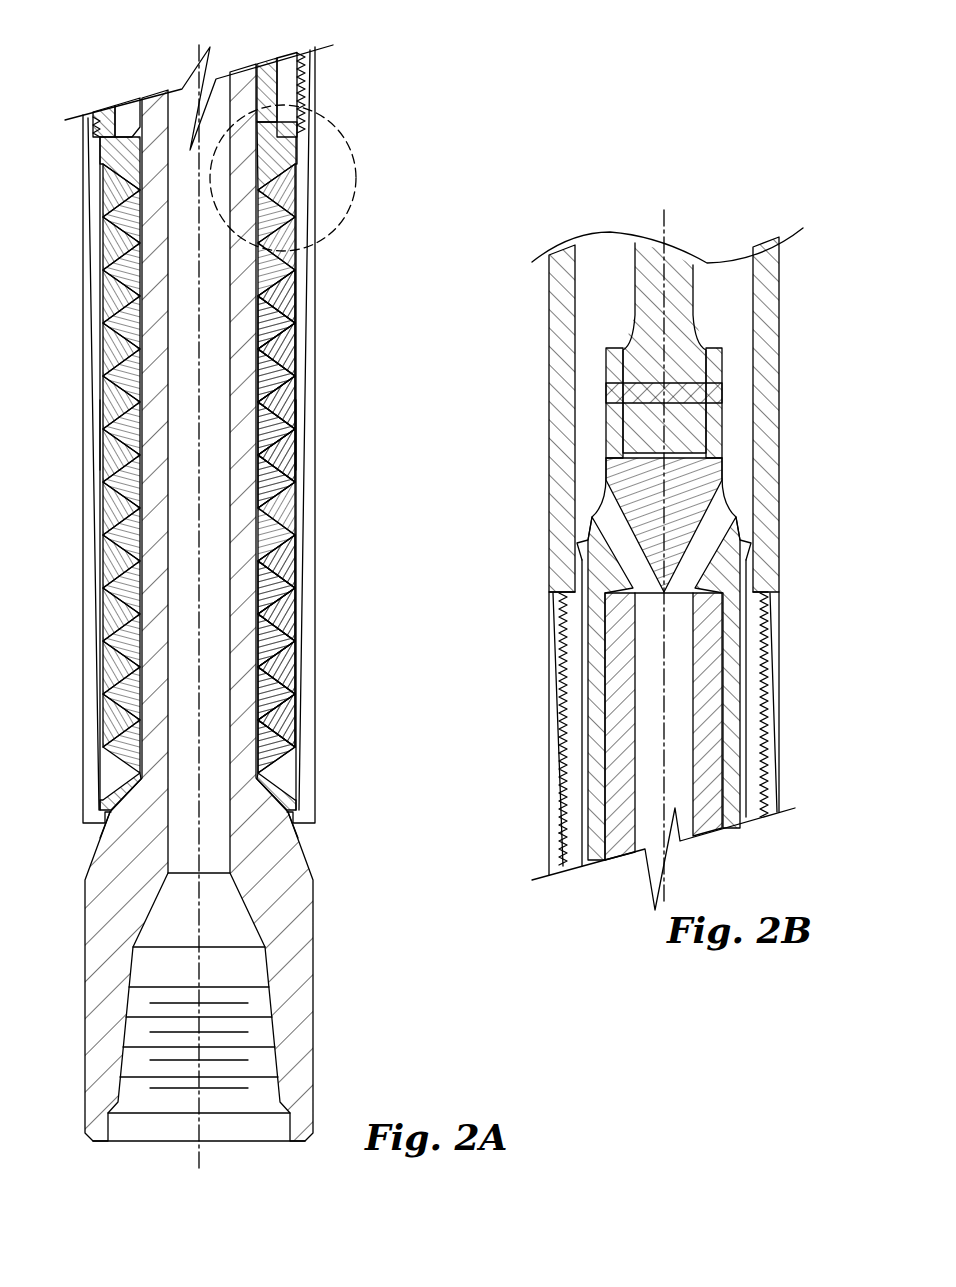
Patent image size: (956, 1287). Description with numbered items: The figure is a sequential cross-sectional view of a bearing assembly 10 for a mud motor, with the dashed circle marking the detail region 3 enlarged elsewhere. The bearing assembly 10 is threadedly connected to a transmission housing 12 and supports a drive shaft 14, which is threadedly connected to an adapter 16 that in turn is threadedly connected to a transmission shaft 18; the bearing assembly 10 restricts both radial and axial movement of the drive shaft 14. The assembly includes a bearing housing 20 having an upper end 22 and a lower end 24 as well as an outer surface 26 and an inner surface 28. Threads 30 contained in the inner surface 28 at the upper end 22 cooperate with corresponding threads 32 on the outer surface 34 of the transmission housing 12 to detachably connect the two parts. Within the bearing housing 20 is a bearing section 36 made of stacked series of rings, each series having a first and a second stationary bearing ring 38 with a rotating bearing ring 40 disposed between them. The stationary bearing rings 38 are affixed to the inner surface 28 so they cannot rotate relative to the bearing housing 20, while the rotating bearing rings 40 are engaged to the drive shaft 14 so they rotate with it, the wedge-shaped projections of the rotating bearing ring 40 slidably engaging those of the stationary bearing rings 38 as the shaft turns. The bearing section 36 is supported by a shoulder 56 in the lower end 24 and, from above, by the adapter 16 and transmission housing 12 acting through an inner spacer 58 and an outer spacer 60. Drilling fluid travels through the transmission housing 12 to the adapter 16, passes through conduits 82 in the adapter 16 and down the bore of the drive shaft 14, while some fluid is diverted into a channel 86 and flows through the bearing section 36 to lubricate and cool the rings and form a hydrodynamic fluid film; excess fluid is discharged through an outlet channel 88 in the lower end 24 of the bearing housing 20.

In FIG. 2A, the bearing assembly 10 is at (215, 590).
In FIG. 2B, the transmission housing 12 is at (773, 397).
In FIG. 2A, the drive shaft 14 is at (155, 578).
In FIG. 2B, the adapter 16 is at (609, 428).
In FIG. 2B, the transmission shaft 18 is at (680, 330).
In FIG. 2A, the bearing housing 20 is at (90, 350).
In FIG. 2B, the upper end 22 is at (773, 615).
In FIG. 2A, the lower end 24 is at (317, 773).
In FIG. 2A, the outer surface 26 is at (85, 205).
In FIG. 2A, the inner surface 28 is at (105, 430).
In FIG. 2B, the threads 30 is at (565, 705).
In FIG. 2B, the threads 32 is at (768, 673).
In FIG. 2B, the outer surface 34 is at (782, 540).
In FIG. 2A, the bearing section 36 is at (298, 500).
In FIG. 2A, the stationary bearing ring 38 is at (293, 300).
In FIG. 2A, the rotating bearing ring 40 is at (290, 390).
In FIG. 2A, the shoulder 56 is at (305, 823).
In FIG. 2A, the inner spacer 58 is at (274, 133).
In FIG. 2A, the outer spacer 60 is at (293, 148).
In FIG. 2B, the conduits 82 is at (612, 530).
In FIG. 2A, the channel 86 is at (120, 115).
In FIG. 2B, the channel 86 is at (583, 597).
In FIG. 2A, the outlet channel 88 is at (103, 827).
In FIG. 2A, the detail region of FIG. 3 is at (342, 127).